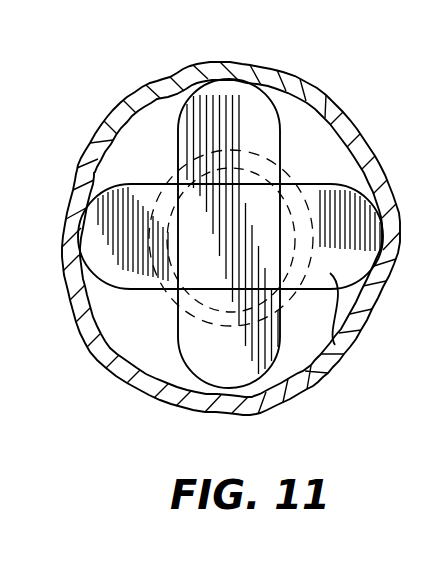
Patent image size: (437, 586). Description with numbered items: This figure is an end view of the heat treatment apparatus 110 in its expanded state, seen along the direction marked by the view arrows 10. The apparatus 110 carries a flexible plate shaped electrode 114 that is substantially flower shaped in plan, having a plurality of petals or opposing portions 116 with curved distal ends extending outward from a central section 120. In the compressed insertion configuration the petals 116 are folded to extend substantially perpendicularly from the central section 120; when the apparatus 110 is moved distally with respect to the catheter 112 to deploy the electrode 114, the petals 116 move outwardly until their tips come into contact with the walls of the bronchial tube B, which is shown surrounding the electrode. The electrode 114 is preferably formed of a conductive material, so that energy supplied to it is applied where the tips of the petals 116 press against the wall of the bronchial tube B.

The section line 10- 10 is at (229, 50).
The heat treatment apparatus 110 is at (298, 114).
The bronchial tube B is at (363, 139).
The catheter 112 is at (178, 288).
The flexible plate shaped electrode 114 is at (294, 219).
The petals 116 is at (123, 183).
The central section 120 is at (197, 270).